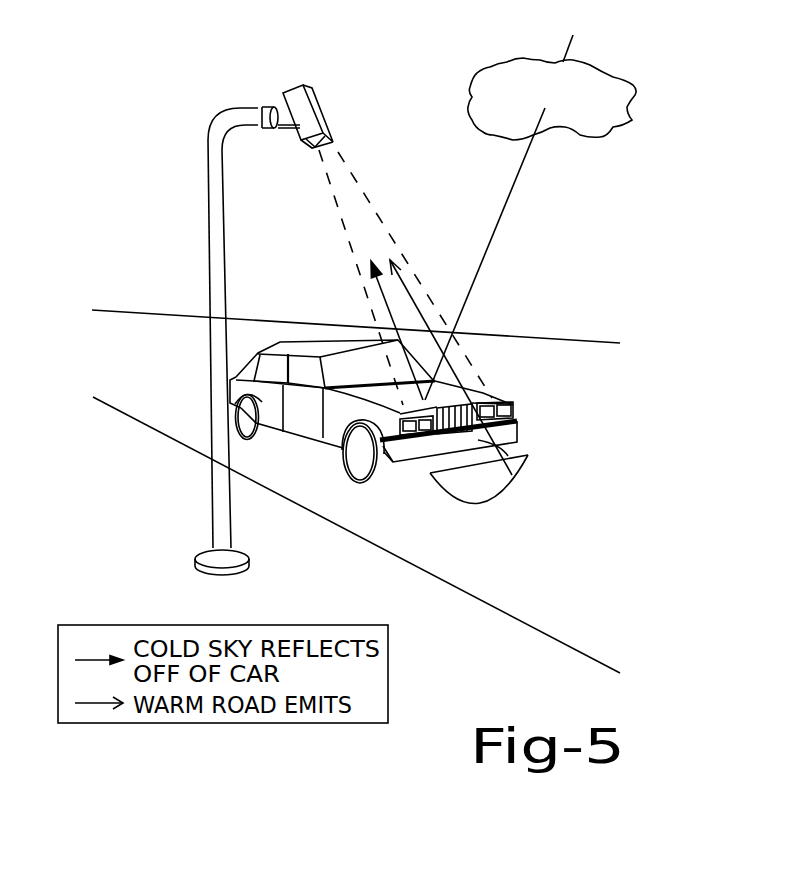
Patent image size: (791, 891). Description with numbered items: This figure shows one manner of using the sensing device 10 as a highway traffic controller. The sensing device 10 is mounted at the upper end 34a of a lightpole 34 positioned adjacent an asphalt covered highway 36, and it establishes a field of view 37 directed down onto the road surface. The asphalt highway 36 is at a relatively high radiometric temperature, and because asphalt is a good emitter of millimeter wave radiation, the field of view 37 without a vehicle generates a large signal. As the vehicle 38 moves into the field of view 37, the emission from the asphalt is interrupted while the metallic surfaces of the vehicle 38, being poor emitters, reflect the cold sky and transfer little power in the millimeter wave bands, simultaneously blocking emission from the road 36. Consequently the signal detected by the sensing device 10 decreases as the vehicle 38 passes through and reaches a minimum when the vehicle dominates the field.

The sensing device 10 is at (302, 102).
The lightpole 34 is at (210, 246).
The upper end of lightpole 34a is at (238, 110).
The asphalt covered highway 36 is at (604, 582).
The field of view 37 is at (375, 218).
The vehicle 38 is at (338, 352).